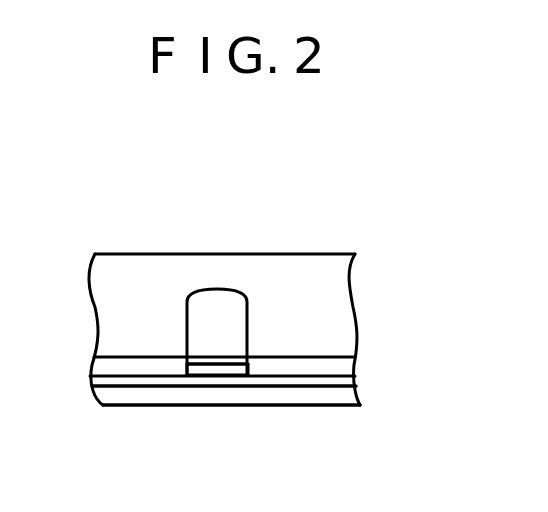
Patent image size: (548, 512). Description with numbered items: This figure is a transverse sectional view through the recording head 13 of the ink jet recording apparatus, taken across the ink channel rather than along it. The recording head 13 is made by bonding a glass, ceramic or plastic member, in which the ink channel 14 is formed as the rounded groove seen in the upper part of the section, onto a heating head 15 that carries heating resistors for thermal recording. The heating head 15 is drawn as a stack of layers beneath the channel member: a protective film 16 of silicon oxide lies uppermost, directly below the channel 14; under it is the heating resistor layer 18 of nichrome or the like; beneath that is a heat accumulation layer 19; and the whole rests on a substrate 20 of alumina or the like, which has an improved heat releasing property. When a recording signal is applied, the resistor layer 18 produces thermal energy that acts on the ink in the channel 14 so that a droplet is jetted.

The recording head 13 is at (117, 254).
The ink channel 14 is at (228, 254).
The heating head 15 is at (381, 353).
The protective film 16 is at (256, 364).
The heating resistor layer 18 is at (246, 374).
The heat accumulation layer 19 is at (258, 385).
The substrate 20 is at (308, 405).